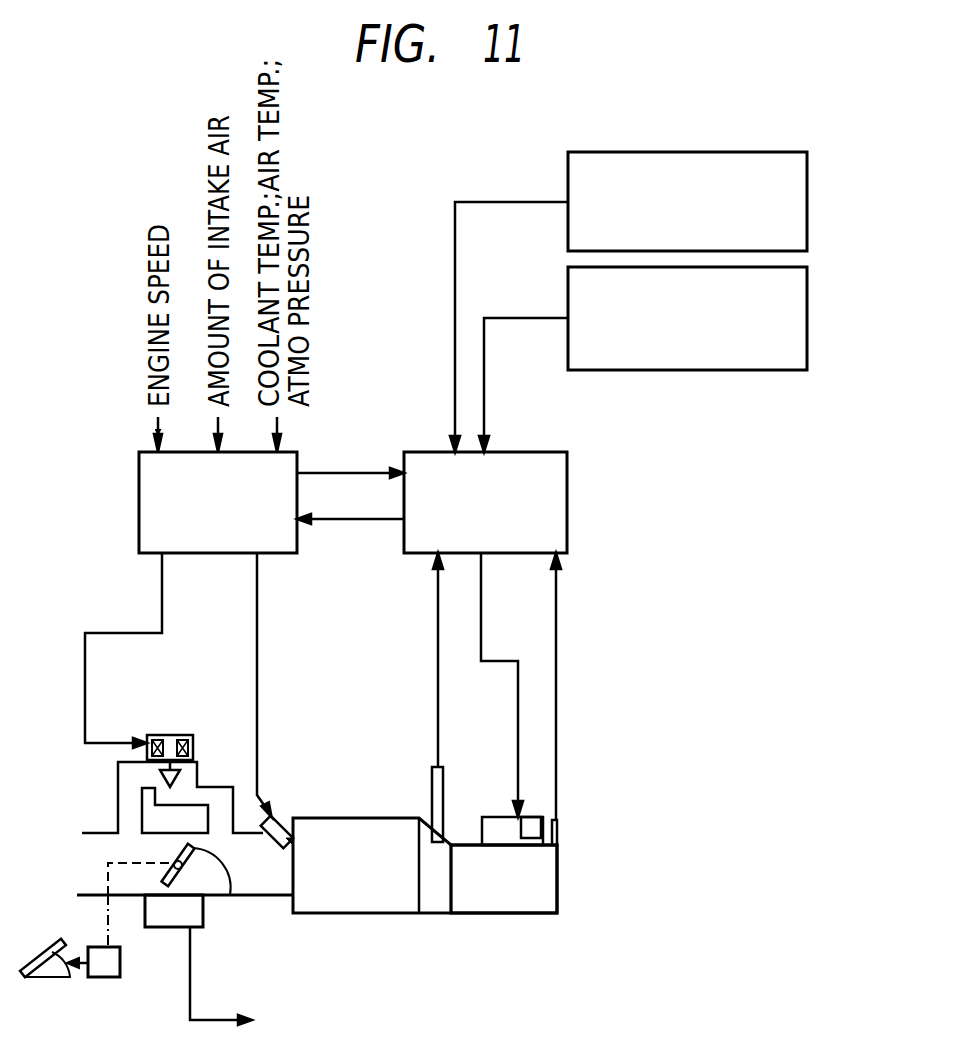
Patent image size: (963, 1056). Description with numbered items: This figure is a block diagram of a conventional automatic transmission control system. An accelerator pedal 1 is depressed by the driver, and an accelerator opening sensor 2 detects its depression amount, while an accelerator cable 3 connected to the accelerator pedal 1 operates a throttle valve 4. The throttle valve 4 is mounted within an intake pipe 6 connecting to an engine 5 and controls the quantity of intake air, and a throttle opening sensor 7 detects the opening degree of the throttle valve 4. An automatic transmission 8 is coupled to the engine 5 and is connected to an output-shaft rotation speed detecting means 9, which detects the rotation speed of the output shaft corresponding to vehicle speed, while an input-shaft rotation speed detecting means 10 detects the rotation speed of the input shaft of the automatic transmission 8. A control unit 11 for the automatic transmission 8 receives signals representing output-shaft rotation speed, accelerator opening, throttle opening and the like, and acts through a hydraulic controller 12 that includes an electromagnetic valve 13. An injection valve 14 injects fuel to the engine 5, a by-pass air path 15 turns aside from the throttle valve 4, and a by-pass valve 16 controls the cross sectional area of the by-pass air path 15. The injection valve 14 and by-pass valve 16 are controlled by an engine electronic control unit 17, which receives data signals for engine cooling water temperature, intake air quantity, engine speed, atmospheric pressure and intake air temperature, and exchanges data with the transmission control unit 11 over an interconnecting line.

The accelerator pedal 1 is at (53, 980).
The accelerator opening sensor 2 is at (110, 977).
The accelerator cable 3 is at (110, 928).
The throttle valve 4 is at (230, 898).
The engine 5 is at (380, 818).
The intake pipe 6 is at (267, 880).
The throttle opening sensor 7 is at (170, 927).
The automatic transmission 8 is at (510, 913).
The output-shaft rotation speed detecting means 9 is at (807, 350).
The input-shaft rotation speed detecting means 10 is at (807, 235).
The control unit 11 is at (527, 553).
The hydraulic controller 12 is at (492, 817).
The electromagnetic valve 13 is at (532, 817).
The injection valve 14 is at (283, 815).
The by-pass air path 15 is at (217, 787).
The by-pass valve 16 is at (182, 737).
The engine electronic control unit 17 is at (283, 553).